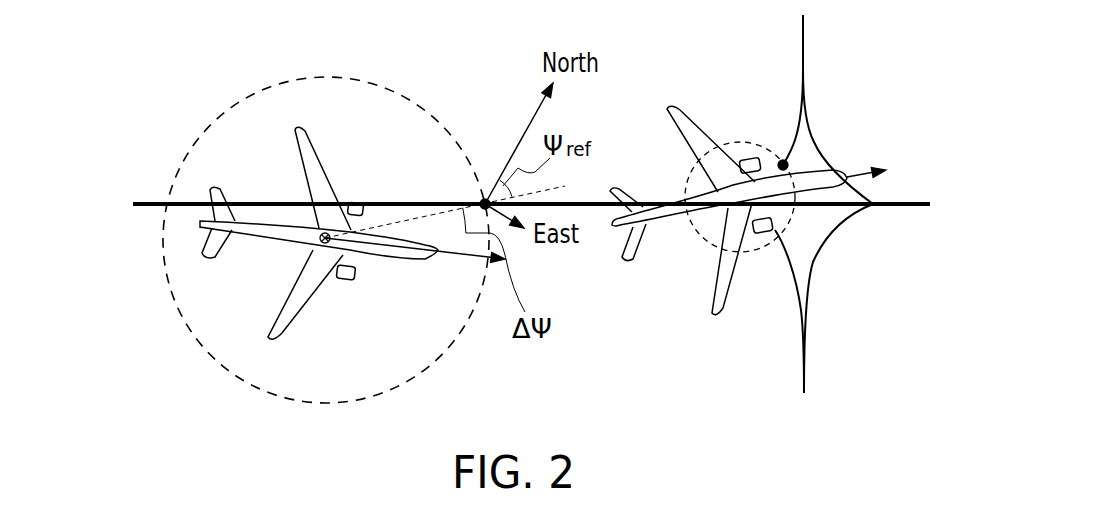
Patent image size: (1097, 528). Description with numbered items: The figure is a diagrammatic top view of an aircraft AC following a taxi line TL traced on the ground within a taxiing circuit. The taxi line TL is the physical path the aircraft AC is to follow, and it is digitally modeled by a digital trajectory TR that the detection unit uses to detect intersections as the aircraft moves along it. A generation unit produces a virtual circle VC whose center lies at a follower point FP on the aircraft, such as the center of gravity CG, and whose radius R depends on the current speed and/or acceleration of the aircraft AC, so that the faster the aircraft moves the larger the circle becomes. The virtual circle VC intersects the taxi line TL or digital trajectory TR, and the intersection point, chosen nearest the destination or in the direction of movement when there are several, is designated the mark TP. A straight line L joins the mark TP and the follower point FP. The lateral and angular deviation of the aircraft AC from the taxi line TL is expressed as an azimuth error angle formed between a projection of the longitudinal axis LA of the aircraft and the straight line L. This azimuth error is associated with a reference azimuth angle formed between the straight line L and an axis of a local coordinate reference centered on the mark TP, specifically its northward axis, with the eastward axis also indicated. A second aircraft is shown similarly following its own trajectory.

The taxi line TL is at (502, 158).
The digital trajectory TR is at (157, 202).
The aircraft AC is at (254, 219).
The radius R is at (319, 219).
The straight line L is at (388, 226).
The follower point FP is at (206, 297).
The center of gravity CG is at (319, 240).
The longitudinal axis LA is at (465, 255).
The virtual circle VC is at (430, 360).
The mark TP is at (484, 200).